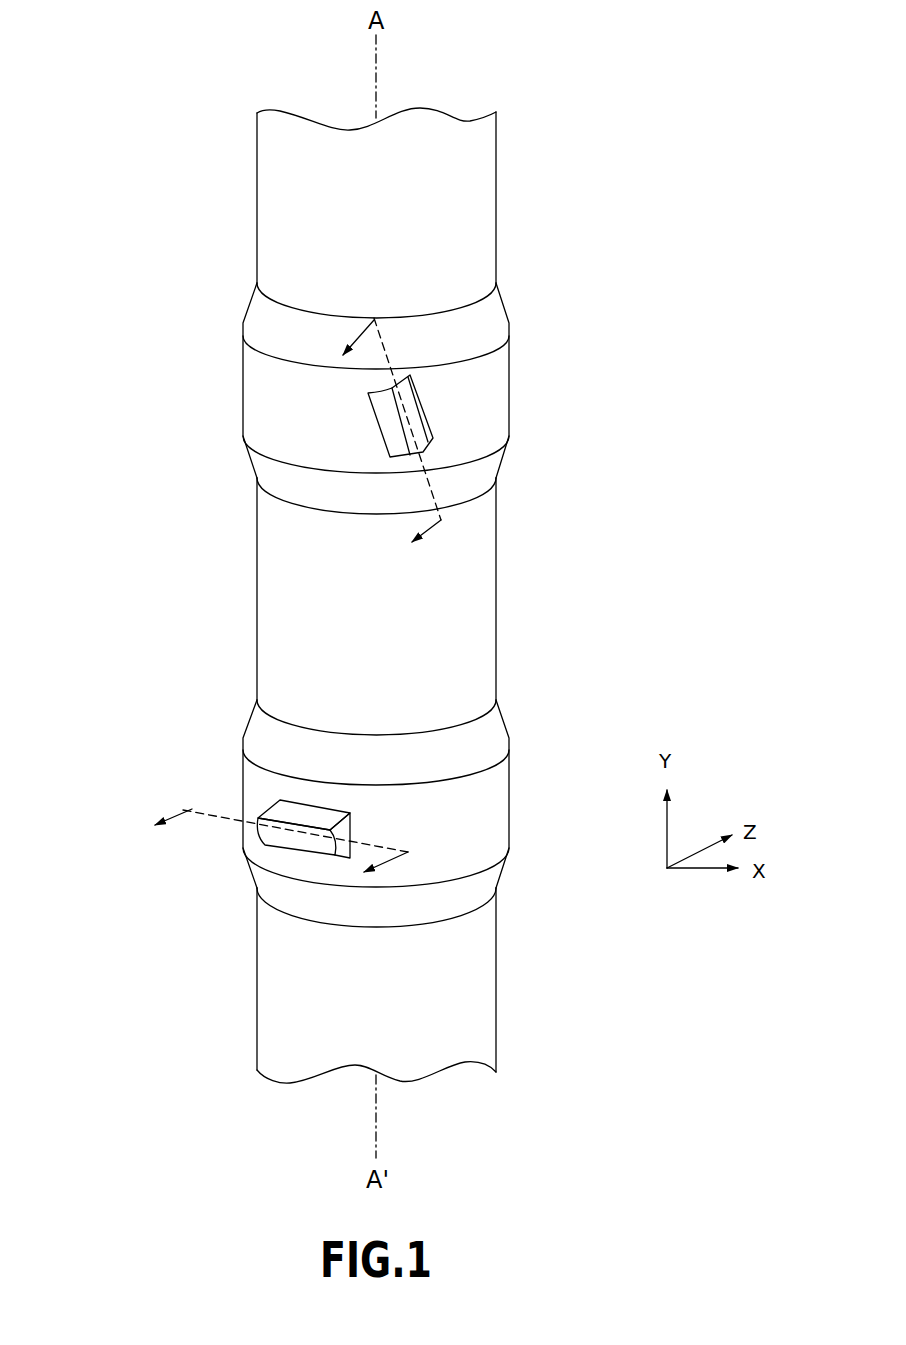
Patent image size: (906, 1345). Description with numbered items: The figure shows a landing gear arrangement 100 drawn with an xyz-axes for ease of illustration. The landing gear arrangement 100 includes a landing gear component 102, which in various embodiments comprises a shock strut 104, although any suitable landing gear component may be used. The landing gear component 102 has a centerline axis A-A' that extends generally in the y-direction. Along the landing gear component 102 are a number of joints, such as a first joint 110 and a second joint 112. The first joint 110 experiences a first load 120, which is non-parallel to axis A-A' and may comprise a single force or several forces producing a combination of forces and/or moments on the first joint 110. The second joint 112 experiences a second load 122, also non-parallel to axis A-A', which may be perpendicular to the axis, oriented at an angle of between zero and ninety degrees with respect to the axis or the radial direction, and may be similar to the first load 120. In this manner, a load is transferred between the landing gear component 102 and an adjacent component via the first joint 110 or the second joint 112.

The landing gear arrangement 100 is at (148, 82).
The landing gear component 102 is at (272, 183).
The shock strut 104 is at (272, 608).
The first joint 110 is at (431, 430).
The second joint 112 is at (283, 830).
The first load 120 is at (422, 535).
The second load 122 is at (190, 808).